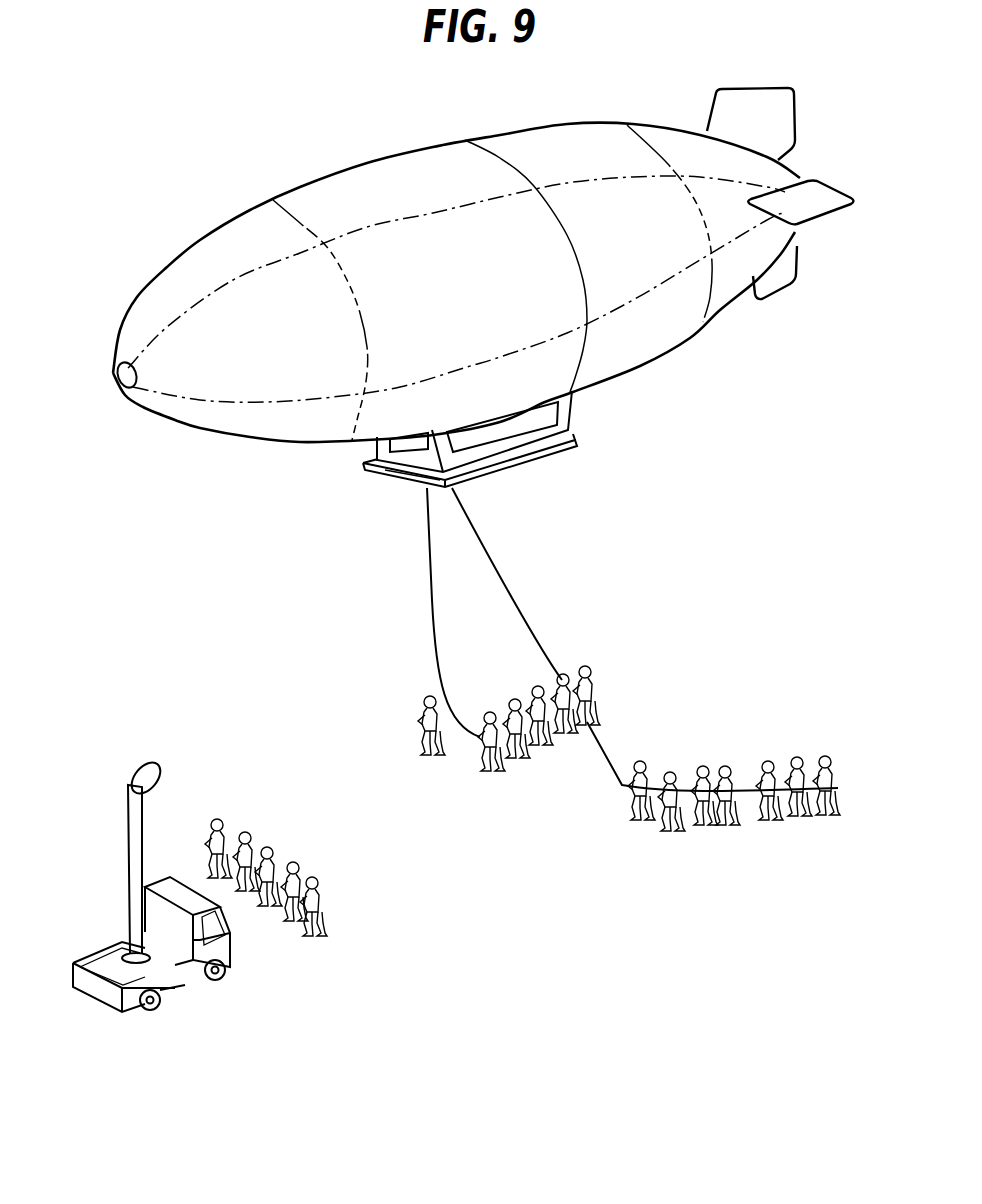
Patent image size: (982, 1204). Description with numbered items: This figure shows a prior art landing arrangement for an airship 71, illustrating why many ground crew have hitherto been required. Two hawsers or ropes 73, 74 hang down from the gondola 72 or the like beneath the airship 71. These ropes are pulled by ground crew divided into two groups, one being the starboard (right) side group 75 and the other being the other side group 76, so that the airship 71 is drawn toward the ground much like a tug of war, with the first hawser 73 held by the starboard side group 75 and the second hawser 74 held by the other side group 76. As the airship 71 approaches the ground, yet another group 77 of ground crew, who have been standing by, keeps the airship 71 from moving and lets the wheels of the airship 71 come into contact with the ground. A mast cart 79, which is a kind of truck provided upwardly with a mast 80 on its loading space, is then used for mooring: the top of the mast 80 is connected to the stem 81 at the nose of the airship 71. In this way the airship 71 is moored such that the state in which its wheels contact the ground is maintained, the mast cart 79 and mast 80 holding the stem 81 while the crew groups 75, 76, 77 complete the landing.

The airship 71 is at (695, 300).
The gondola 72 is at (537, 438).
The hawser 73 is at (427, 534).
The hawser 74 is at (517, 592).
The starboard side group 75 is at (412, 689).
The other side group 76 is at (709, 726).
The group of ground crew 77 is at (307, 846).
The mast cart 79 is at (224, 948).
The mast 80 is at (128, 877).
The stem 81 is at (118, 380).